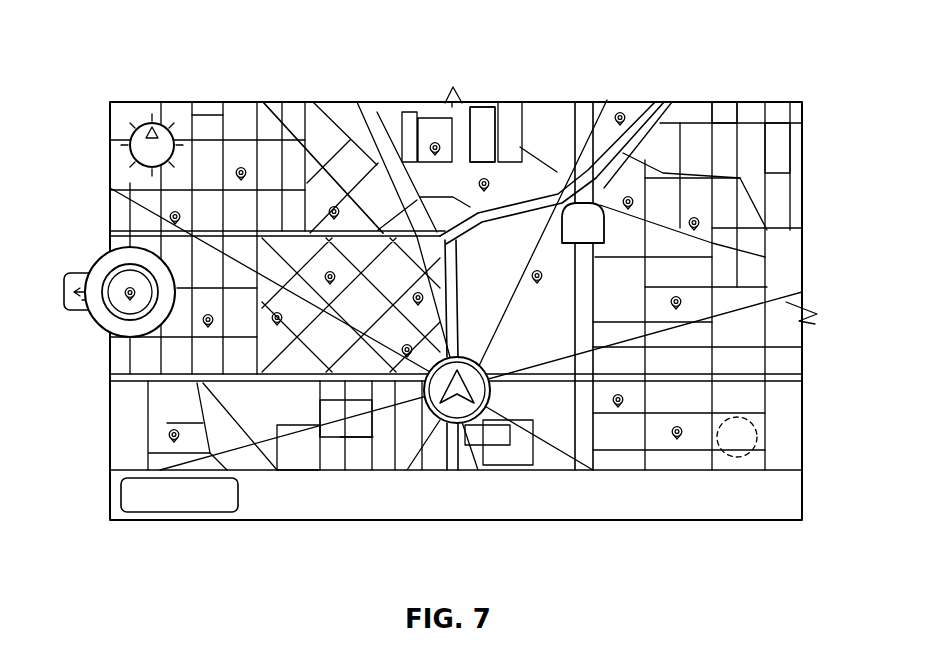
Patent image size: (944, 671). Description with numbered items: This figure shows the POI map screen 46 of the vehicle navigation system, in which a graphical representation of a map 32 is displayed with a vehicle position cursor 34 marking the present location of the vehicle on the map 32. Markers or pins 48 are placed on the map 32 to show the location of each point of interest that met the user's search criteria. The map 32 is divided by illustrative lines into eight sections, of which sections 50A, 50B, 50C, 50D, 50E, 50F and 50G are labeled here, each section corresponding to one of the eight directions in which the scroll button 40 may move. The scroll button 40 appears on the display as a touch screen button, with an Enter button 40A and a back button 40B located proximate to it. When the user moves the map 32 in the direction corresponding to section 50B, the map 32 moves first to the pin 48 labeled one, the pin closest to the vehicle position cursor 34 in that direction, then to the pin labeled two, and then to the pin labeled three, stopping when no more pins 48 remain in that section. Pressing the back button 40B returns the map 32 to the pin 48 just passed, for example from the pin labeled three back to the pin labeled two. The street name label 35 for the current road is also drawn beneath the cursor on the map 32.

The map 32 is at (118, 366).
The vehicle position cursor 34 is at (423, 394).
The road label (Hawthorne Blvd) 35 is at (430, 440).
The scroll button 40 is at (109, 295).
The Enter button 40A is at (130, 320).
The back button 40B is at (88, 282).
The POI map screen 46 is at (664, 99).
The pins 48 is at (612, 120).
The section 50A is at (483, 113).
The section 50B is at (720, 118).
The section 50C is at (775, 158).
The section 50D is at (530, 455).
The section 50E is at (465, 444).
The section 50F is at (345, 414).
The section 50G is at (301, 452).